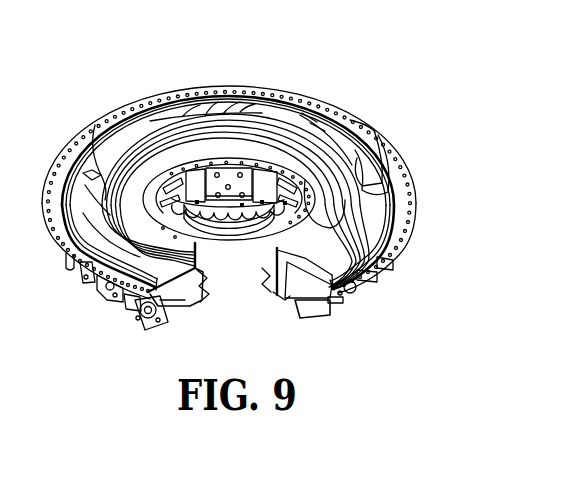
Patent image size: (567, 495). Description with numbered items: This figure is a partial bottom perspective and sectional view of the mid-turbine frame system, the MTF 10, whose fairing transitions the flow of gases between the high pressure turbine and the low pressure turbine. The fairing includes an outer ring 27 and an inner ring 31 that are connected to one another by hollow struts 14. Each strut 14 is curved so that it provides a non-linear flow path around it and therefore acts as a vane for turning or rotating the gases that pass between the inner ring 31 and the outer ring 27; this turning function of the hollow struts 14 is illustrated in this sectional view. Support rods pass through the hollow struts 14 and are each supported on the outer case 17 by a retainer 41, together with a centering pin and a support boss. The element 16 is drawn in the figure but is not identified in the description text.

The mid-turbine frame 10 is at (340, 36).
The hollow strut 14 is at (97, 209).
The inner shroud surface 16 is at (230, 147).
The outer case 17 is at (411, 213).
The outer ring 27 is at (93, 145).
The inner ring 31 is at (147, 127).
The retainer 41 is at (146, 320).